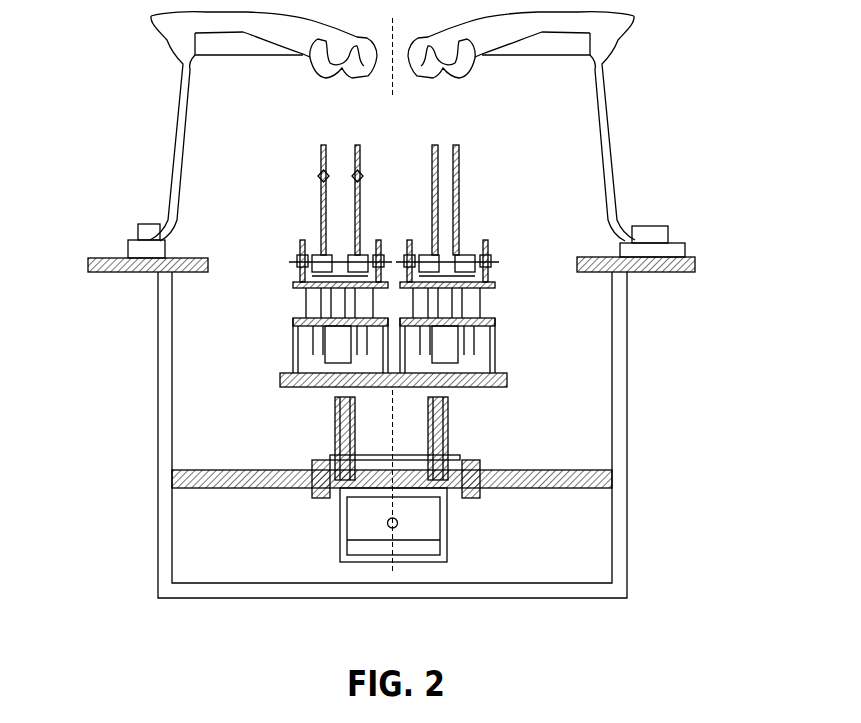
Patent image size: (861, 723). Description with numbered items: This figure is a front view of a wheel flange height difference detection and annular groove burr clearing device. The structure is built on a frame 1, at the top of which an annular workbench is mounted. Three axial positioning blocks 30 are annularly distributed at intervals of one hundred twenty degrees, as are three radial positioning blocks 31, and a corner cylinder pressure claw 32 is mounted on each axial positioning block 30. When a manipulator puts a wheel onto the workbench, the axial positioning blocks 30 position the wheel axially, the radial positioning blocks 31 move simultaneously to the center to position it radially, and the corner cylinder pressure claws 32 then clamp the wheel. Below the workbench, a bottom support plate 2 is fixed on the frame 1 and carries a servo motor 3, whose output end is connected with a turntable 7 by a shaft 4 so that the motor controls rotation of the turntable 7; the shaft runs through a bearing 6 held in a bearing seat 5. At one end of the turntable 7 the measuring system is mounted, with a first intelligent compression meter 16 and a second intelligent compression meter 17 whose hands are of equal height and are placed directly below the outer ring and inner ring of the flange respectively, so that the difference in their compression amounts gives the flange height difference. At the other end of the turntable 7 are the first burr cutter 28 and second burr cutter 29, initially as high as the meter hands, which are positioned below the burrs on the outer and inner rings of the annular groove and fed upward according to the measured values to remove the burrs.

The frame 1 is at (165, 518).
The bottom support plate 2 is at (320, 497).
The servo motor 3 is at (447, 540).
The shaft 4 is at (430, 435).
The bearing seat 5 is at (322, 462).
The bearing 6 is at (345, 405).
The turntable 7 is at (447, 370).
The first intelligent compression meter 16 is at (358, 175).
The second intelligent compression meter 17 is at (322, 175).
The first burr cutter 28 is at (462, 162).
The second burr cutter 29 is at (438, 145).
The axial positioning blocks 30 is at (130, 248).
The radial positioning blocks 31 is at (668, 228).
The corner cylinder pressure claws 32 is at (148, 232).